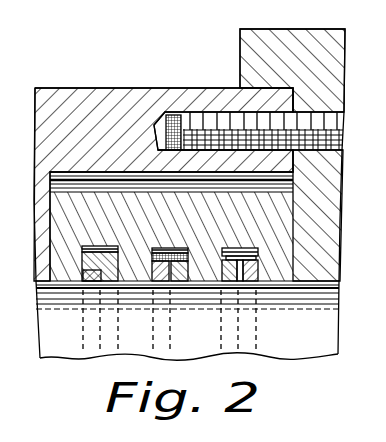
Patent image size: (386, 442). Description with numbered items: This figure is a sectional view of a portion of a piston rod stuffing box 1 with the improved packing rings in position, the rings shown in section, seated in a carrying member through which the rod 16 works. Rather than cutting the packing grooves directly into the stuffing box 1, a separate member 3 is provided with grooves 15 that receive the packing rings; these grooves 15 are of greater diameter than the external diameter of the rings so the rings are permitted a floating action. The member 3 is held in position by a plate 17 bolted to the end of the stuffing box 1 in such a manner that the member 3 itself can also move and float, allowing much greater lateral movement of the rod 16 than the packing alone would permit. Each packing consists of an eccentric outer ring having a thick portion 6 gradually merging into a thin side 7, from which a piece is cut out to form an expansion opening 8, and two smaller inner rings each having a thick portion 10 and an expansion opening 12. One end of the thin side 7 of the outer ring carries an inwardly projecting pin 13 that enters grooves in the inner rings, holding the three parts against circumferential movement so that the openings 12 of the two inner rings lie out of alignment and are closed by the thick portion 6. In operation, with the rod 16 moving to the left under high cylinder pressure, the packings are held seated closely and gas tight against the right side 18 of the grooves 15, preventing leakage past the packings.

The stuffing box 1 is at (107, 104).
The separate member 3 is at (86, 210).
The thick portion 6 is at (83, 282).
The thin side 7 is at (207, 268).
The expansion opening 8 is at (153, 286).
The thick portion 10 is at (170, 282).
The expansion opening 12 is at (110, 278).
The pin 13 is at (240, 281).
The grooves 15 is at (60, 278).
The rod 16 is at (187, 320).
The plate 17 is at (333, 84).
The right side of groove 18 is at (156, 249).